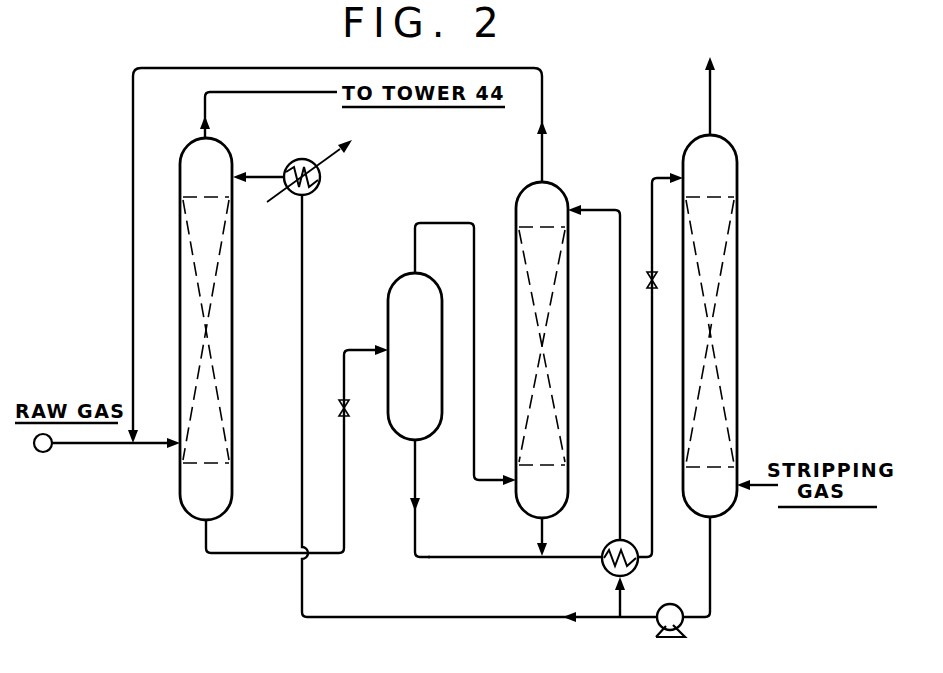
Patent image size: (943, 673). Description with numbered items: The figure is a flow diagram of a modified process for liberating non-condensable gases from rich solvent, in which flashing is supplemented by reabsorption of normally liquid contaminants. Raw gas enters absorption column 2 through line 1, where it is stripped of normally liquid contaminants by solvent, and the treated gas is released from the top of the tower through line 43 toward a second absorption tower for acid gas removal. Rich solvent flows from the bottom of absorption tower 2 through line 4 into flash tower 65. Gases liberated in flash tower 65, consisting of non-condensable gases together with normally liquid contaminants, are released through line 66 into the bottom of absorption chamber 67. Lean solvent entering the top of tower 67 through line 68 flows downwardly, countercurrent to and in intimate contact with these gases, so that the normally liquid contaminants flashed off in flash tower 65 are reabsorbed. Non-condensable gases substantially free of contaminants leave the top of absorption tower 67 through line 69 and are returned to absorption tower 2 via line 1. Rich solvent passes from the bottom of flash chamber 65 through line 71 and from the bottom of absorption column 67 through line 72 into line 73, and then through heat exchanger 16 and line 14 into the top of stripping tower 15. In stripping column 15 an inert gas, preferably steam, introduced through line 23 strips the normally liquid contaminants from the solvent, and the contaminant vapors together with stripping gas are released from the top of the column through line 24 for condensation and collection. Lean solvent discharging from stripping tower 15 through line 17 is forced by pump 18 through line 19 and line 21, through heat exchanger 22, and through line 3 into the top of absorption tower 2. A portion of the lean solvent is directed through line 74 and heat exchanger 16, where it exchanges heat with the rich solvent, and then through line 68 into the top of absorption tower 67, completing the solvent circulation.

The line 1 is at (150, 441).
The absorption column 2 is at (185, 350).
The line 3 is at (265, 176).
The line 4 is at (243, 552).
The line 14 is at (651, 296).
The stripping column 15 is at (738, 333).
The heat exchanger 16 is at (605, 568).
The line 17 is at (712, 576).
The pump 18 is at (680, 622).
The line 19 is at (500, 618).
The line 21 is at (303, 232).
The heat exchanger 22 is at (320, 184).
The line 23 is at (764, 488).
The line 24 is at (711, 100).
The line 43 is at (203, 133).
The flash tower 65 is at (395, 311).
The line 66 is at (441, 222).
The absorption chamber 67 is at (519, 360).
The line 68 is at (604, 206).
The line 69 is at (543, 145).
The line 71 is at (413, 488).
The line 72 is at (540, 530).
The line 73 is at (557, 555).
The line 74 is at (618, 607).